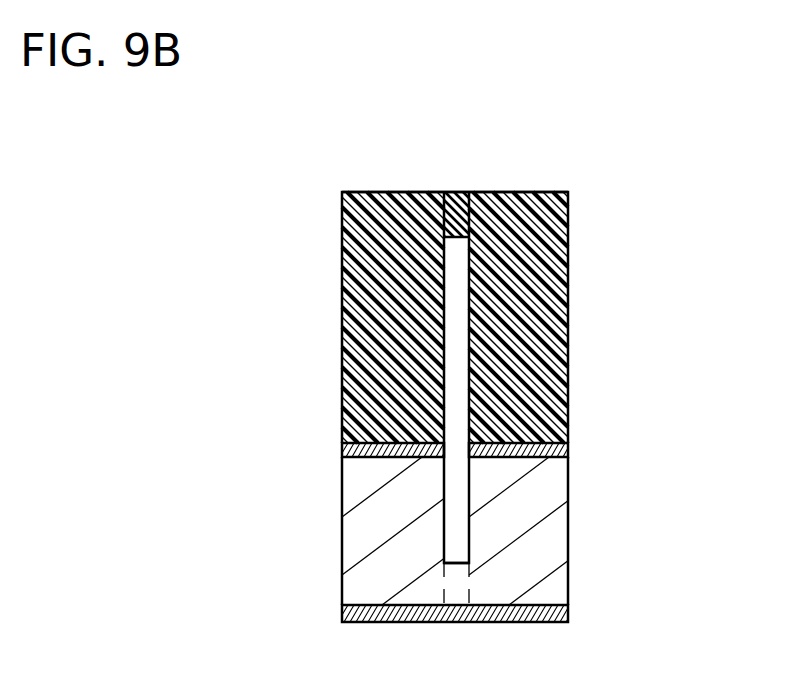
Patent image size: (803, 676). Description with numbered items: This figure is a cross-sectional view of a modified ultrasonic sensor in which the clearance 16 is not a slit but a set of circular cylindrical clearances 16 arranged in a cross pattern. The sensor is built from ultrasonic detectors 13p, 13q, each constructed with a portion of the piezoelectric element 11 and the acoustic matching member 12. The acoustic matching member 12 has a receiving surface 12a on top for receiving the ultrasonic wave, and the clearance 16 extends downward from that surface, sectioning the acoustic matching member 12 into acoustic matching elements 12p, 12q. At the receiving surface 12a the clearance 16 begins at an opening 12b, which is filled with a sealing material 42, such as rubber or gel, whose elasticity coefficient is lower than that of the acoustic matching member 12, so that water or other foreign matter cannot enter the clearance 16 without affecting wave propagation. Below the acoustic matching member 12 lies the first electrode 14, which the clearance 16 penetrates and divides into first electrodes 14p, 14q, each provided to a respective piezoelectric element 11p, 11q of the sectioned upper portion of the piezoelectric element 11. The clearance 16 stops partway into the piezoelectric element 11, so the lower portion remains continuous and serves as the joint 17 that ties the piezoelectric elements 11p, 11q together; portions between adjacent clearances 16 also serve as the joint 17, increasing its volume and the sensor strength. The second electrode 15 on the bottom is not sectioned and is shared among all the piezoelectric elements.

The piezoelectric element 11 is at (571, 561).
The piezoelectric element 11p is at (348, 470).
The piezoelectric element 11q is at (568, 462).
The acoustic matching member 12 is at (571, 329).
The receiving surface 12a is at (367, 191).
The opening 12b is at (463, 191).
The acoustic matching element 12p is at (343, 403).
The acoustic matching element 12q is at (568, 396).
The ultrasonic detector 13p is at (291, 398).
The ultrasonic detector 13q is at (622, 398).
The first electrode 14 is at (455, 500).
The first electrode 14p is at (405, 447).
The first electrode 14q is at (508, 450).
The second electrode 15 is at (342, 609).
The clearance 16 is at (467, 306).
The joint 17 is at (448, 582).
The sealing material 42 is at (445, 191).